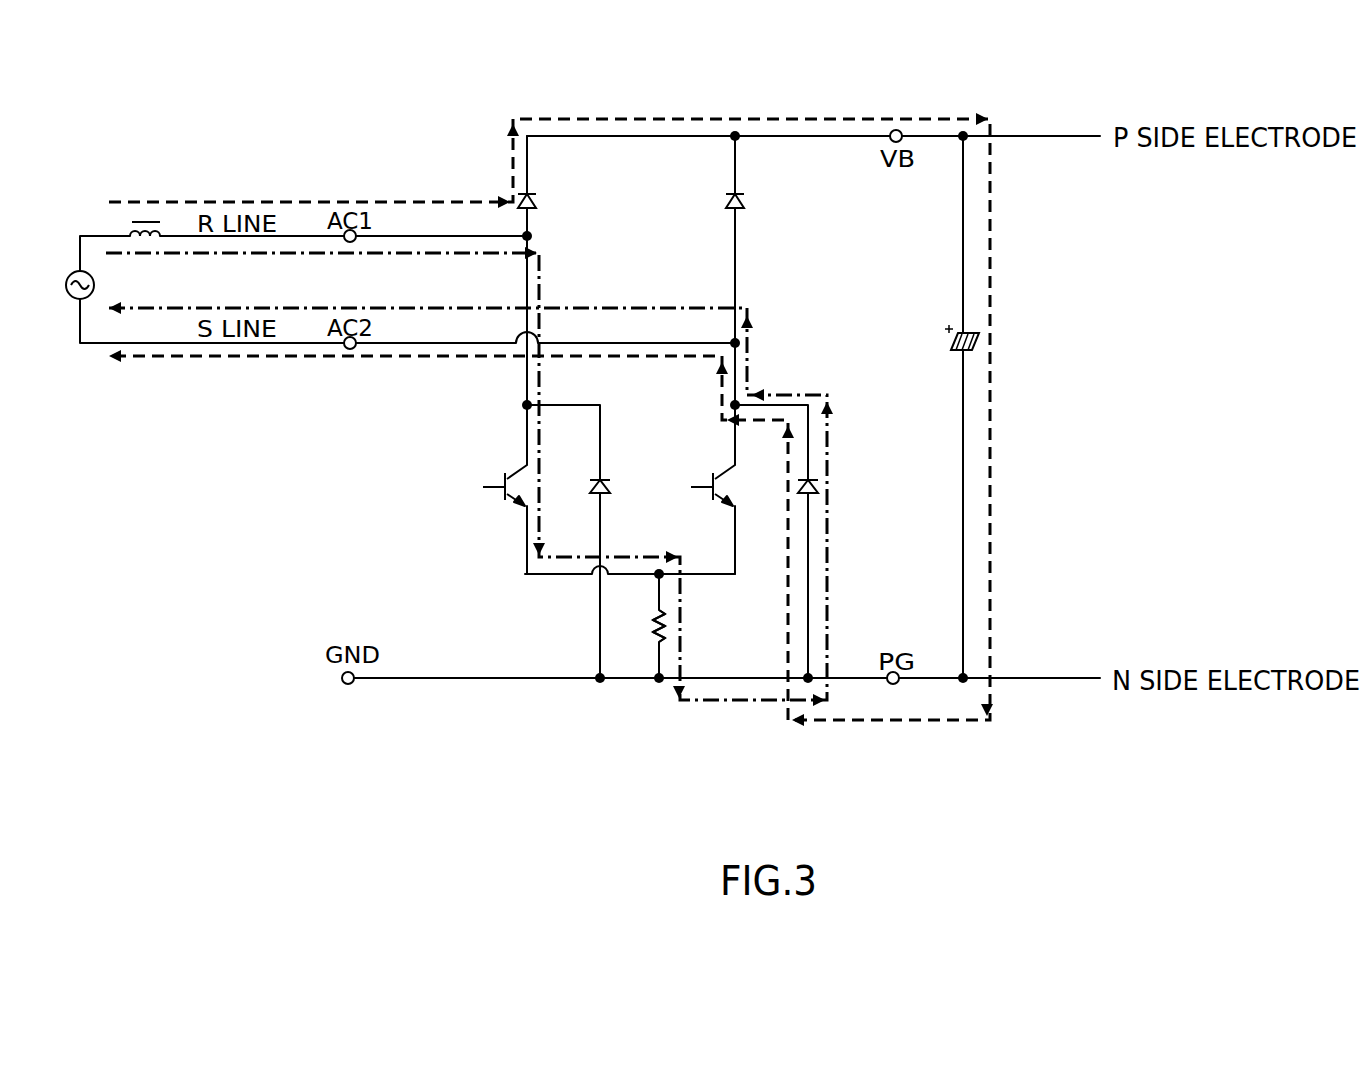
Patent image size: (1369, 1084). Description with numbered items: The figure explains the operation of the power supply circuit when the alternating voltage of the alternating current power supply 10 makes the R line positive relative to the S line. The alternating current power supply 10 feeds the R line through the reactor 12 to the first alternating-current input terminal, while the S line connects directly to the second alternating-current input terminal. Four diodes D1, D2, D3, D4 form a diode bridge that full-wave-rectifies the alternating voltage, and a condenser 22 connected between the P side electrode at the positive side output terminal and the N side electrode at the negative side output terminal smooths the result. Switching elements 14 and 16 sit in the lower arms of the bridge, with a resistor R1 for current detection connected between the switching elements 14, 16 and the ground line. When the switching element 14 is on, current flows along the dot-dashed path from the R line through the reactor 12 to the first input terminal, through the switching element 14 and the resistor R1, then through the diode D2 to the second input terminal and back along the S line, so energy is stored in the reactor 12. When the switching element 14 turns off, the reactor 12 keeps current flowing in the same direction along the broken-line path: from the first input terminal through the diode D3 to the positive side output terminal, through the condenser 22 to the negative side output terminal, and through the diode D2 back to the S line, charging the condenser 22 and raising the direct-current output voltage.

The alternating current power supply 10 is at (71, 276).
The reactor 12 is at (152, 221).
The switching element 14 is at (516, 471).
The switching element 16 is at (724, 471).
The condenser 22 is at (948, 326).
The diode D1 is at (606, 486).
The diode D2 is at (814, 486).
The diode D3 is at (532, 197).
The diode D4 is at (740, 197).
The resistor R1 is at (643, 627).